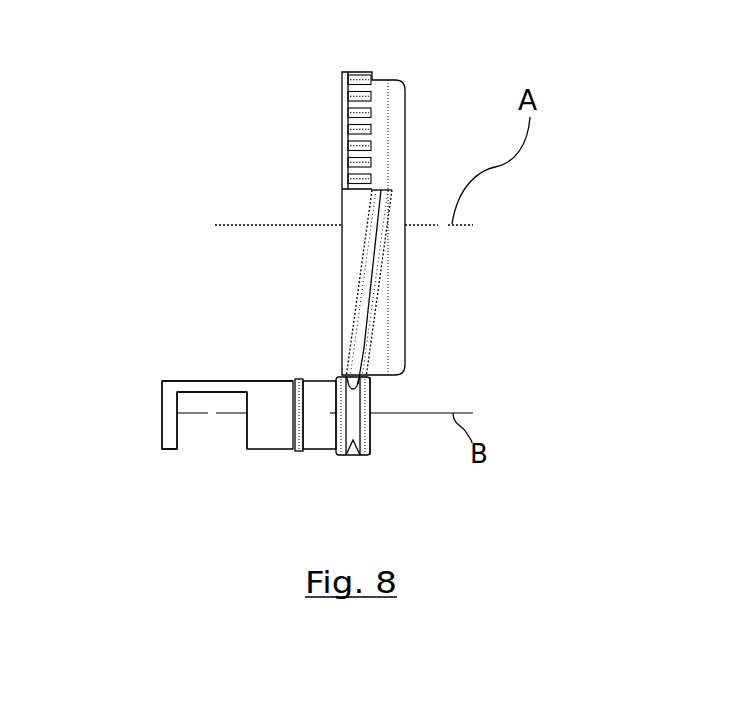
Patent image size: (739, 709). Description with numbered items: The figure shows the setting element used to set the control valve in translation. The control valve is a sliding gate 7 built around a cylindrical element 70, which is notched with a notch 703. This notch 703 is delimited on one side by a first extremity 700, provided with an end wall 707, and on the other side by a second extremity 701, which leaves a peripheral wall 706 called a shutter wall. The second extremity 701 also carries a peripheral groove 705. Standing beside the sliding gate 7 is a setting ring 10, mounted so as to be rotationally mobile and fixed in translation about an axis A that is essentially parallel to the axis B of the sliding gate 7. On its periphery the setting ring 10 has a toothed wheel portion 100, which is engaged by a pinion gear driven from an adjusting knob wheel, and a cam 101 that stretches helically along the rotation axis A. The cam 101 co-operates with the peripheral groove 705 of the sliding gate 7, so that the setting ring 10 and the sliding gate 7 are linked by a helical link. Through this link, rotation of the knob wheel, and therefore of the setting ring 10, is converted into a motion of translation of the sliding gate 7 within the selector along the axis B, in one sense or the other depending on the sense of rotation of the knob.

The setting ring 10 is at (372, 80).
The toothed wheel portion 100 is at (353, 112).
The cam 101 is at (370, 350).
The first extremity 700 is at (138, 370).
The cylindrical element 70 is at (263, 365).
The peripheral wall 706 is at (195, 381).
The end wall 707 is at (164, 446).
The notch 703 is at (219, 430).
The sliding gate 7 is at (310, 450).
The peripheral groove 705 is at (354, 437).
The second extremity 701 is at (404, 461).